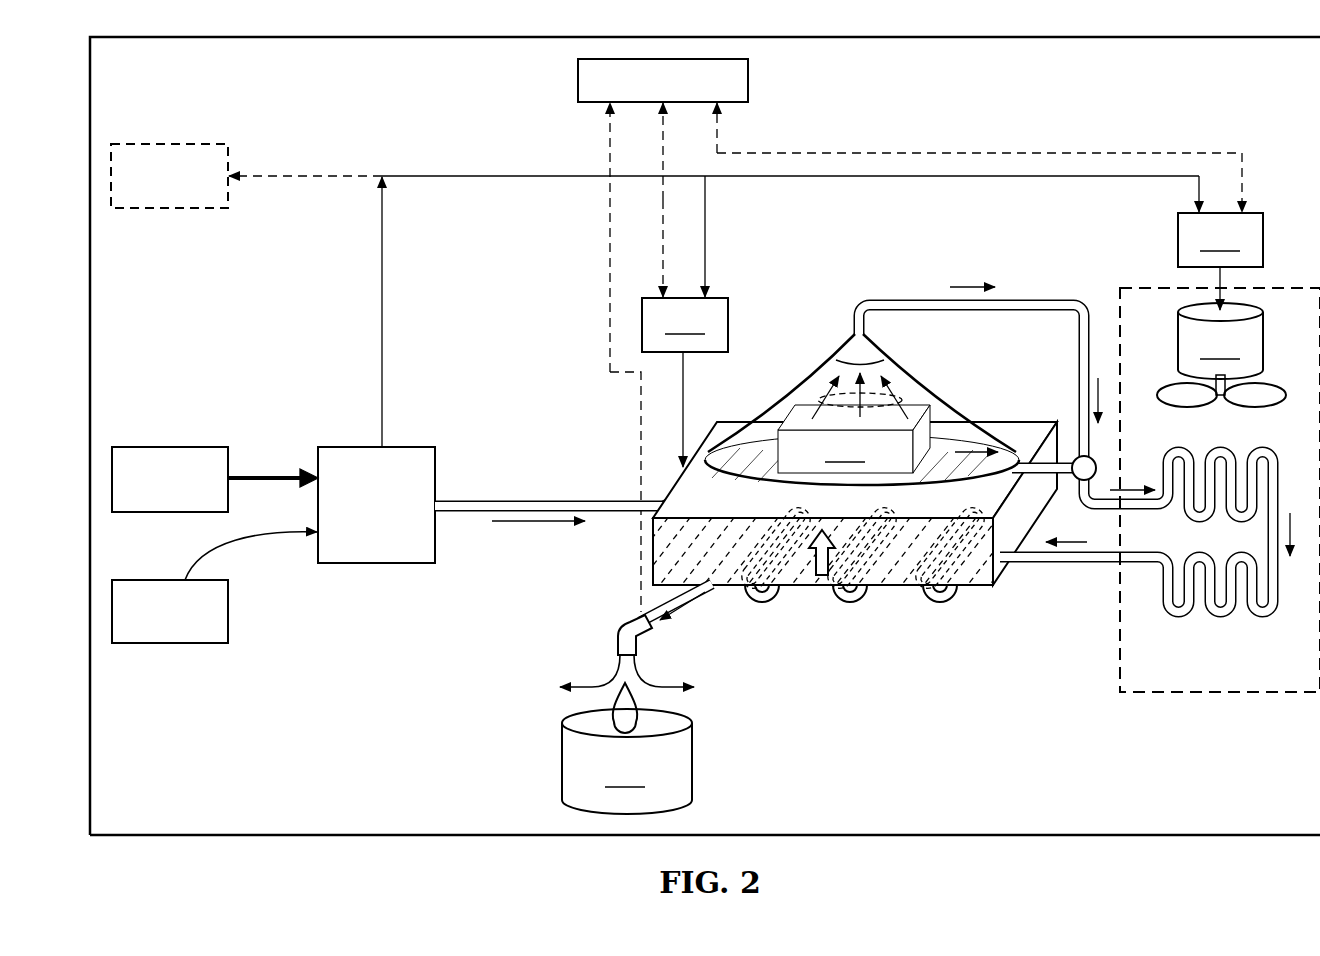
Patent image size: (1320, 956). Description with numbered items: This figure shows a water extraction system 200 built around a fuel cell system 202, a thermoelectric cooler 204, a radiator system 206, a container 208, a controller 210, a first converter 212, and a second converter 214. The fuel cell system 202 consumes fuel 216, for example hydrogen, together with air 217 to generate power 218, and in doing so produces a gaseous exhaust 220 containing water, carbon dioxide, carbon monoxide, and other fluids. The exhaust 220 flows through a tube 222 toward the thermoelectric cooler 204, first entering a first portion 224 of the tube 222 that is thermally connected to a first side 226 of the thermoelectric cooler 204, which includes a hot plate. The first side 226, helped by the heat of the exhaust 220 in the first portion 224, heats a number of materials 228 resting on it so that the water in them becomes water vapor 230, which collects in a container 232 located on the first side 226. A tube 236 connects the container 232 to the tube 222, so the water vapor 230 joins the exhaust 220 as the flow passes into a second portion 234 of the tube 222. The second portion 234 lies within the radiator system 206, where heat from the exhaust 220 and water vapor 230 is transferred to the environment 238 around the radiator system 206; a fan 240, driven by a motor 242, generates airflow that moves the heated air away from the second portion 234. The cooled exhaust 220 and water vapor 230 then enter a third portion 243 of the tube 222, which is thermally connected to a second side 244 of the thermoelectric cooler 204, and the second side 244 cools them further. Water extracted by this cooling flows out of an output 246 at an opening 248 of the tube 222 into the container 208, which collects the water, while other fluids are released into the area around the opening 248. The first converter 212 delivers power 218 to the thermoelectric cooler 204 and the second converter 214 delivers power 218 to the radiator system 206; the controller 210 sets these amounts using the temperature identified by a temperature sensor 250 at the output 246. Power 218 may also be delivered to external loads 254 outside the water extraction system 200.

The water extraction system 200 is at (486, 836).
The fuel cell system 202 is at (367, 565).
The thermoelectric cooler 204 is at (1008, 578).
The radiator system 206 is at (1221, 355).
The container 208 is at (627, 748).
The controller 210 is at (578, 80).
The first converter 212 is at (685, 382).
The second converter 214 is at (1220, 261).
The fuel 216 is at (168, 446).
The air 217 is at (170, 645).
The power 218 is at (382, 318).
The exhaust 220 is at (498, 498).
The tube 222 is at (575, 498).
The first portion 224 is at (965, 438).
The first side 226 is at (1035, 428).
The number of materials 228 is at (854, 439).
The water vapor 230 is at (820, 385).
The container 232 is at (830, 352).
The second portion 234 is at (1262, 627).
The tube 236 is at (905, 297).
The environment 238 is at (1260, 695).
The fan 240 is at (1178, 388).
The motor 242 is at (1220, 341).
The third portion 243 is at (787, 602).
The second side 244 is at (905, 592).
The output 246 is at (617, 640).
The opening 248 is at (607, 655).
The temperature sensor 250 is at (641, 602).
The external loads 254 is at (175, 143).